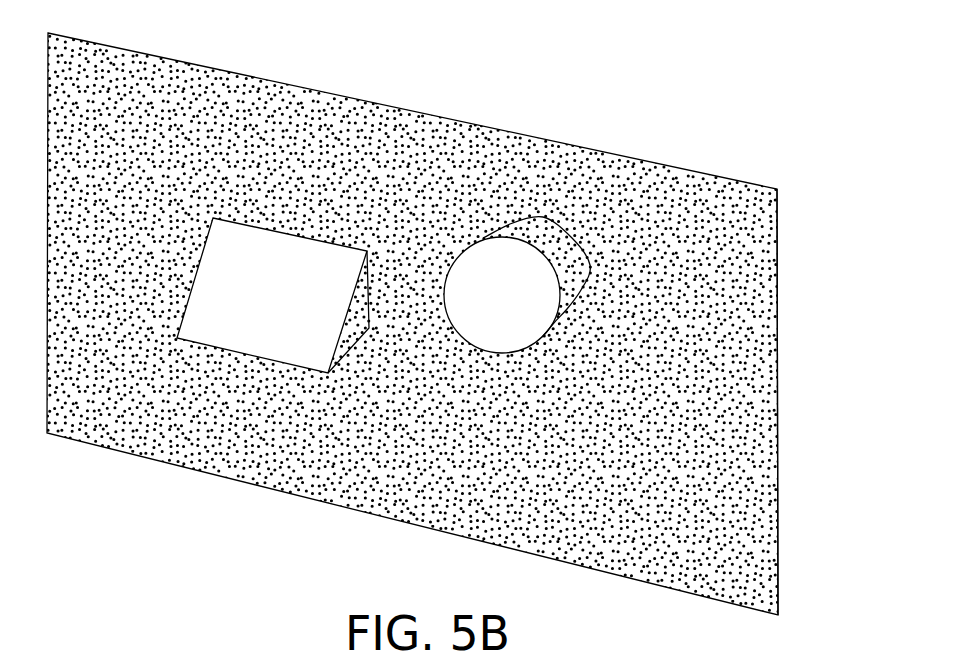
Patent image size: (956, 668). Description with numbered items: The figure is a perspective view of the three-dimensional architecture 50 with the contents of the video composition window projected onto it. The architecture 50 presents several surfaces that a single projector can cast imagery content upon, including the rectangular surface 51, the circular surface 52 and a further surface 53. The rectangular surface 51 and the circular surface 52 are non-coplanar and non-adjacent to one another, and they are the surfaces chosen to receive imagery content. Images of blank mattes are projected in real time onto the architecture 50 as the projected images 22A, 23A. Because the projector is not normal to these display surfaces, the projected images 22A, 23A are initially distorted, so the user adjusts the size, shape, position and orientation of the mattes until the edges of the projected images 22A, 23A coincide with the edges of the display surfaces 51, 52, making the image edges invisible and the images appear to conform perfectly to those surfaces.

The three-dimensional architecture 50 is at (660, 167).
The projected image 22A is at (295, 306).
The projected image 23A is at (527, 307).
The rectangular surface 51 is at (322, 362).
The circular surface 52 is at (536, 330).
The surface 53 is at (758, 477).